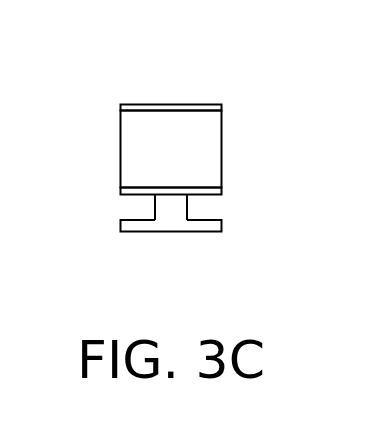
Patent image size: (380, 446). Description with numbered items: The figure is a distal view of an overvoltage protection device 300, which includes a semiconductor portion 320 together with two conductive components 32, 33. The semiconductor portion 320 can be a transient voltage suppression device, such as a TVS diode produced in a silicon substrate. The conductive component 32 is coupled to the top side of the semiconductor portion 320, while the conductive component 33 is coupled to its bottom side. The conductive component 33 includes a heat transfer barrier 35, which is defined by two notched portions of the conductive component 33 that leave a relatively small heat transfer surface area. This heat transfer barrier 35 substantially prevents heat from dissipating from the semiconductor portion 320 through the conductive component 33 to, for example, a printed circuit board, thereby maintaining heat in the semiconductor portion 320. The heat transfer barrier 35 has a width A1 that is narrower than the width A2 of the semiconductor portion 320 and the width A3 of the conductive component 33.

The overvoltage protection device 300 is at (228, 156).
The conductive component 32 is at (208, 101).
The semiconductor portion 320 is at (189, 160).
The heat transfer barrier 35 is at (231, 198).
The conductive component 33 is at (172, 235).
The width of heat transfer barrier A1 is at (220, 208).
The width of semiconductor portion A2 is at (252, 153).
The width of conductive component A3 is at (252, 226).